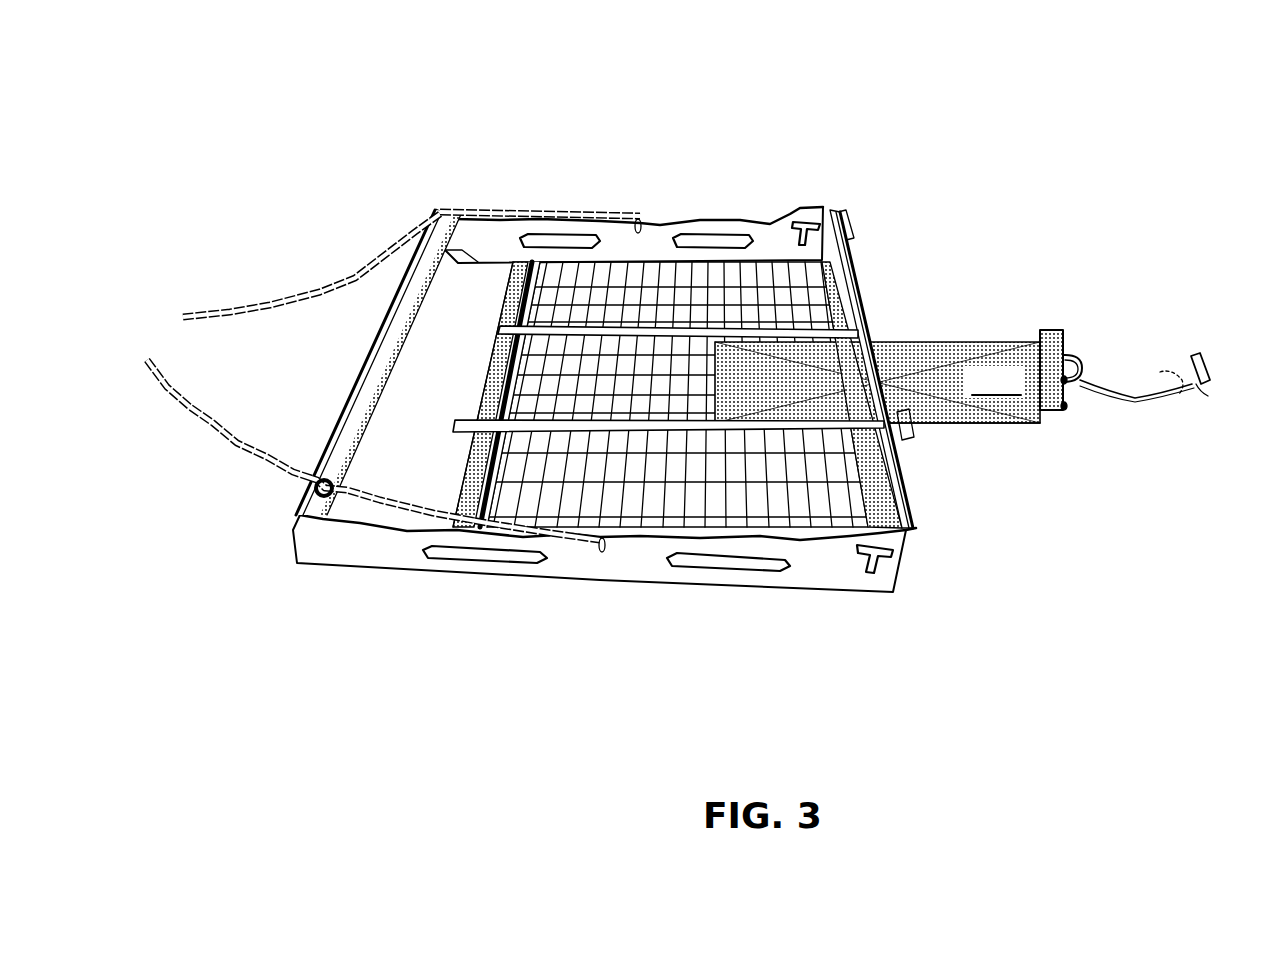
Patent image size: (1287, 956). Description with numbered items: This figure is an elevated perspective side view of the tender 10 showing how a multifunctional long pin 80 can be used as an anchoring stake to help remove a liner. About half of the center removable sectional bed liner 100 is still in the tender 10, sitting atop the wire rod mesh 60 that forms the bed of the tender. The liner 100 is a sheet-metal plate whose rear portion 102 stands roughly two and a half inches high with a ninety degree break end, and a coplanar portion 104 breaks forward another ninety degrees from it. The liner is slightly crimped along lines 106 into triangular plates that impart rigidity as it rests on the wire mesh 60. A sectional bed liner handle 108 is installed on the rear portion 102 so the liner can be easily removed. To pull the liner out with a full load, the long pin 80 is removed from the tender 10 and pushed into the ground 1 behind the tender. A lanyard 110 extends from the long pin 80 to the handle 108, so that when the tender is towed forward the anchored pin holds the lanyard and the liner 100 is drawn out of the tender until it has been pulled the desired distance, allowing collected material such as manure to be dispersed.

The tender 10 is at (430, 138).
The wire rod mesh 60 is at (626, 396).
The removable sectional bed liner 100 is at (1021, 395).
The rear portion 102 is at (1064, 412).
The coplanar portion 104 is at (1068, 403).
The crimp lines 106 is at (1003, 425).
The sectional bed liner handle 108 is at (1080, 372).
The lanyard 110 is at (1138, 400).
The long pin 80 is at (1204, 360).
The ground 1 is at (1213, 402).